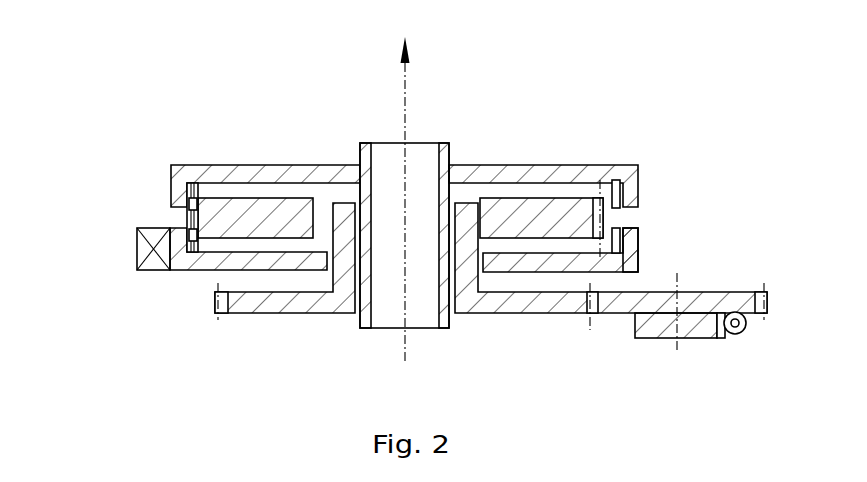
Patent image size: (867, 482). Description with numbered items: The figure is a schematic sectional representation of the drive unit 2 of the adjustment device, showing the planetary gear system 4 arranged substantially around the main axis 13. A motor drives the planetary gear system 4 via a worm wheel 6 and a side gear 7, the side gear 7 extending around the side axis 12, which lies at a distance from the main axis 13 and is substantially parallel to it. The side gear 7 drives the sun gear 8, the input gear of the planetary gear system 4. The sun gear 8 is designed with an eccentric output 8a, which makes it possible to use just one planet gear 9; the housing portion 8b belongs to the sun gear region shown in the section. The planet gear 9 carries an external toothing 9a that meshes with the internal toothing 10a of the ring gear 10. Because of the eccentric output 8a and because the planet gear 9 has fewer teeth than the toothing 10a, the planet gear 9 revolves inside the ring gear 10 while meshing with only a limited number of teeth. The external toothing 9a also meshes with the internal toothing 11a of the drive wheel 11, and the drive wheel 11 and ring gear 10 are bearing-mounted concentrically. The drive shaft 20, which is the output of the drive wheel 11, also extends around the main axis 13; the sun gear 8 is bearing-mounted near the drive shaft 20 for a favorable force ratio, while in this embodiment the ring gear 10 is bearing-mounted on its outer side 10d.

The clutch assembly 2 is at (113, 155).
The planetary gear system 4 is at (118, 190).
The worm wheel 6 is at (738, 330).
The side gear 7 is at (665, 328).
The sun gear 8 is at (493, 303).
The eccentric output 8a is at (342, 218).
The housing joint 8b is at (587, 303).
The planet gear 9 is at (560, 218).
The external toothing 9a is at (595, 222).
The ring gear 10 is at (555, 263).
The internal toothing 10a is at (623, 237).
The outer side 10d is at (628, 248).
The drive wheel 11 is at (595, 173).
The internal toothing 11a is at (620, 192).
The side axis 12 is at (677, 348).
The main axis 13 is at (403, 348).
The drive shaft 20 is at (447, 157).